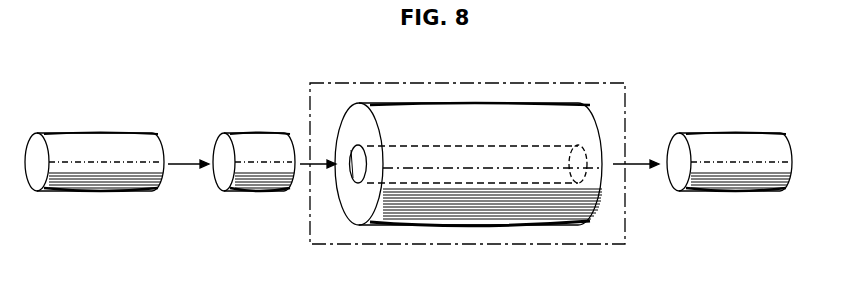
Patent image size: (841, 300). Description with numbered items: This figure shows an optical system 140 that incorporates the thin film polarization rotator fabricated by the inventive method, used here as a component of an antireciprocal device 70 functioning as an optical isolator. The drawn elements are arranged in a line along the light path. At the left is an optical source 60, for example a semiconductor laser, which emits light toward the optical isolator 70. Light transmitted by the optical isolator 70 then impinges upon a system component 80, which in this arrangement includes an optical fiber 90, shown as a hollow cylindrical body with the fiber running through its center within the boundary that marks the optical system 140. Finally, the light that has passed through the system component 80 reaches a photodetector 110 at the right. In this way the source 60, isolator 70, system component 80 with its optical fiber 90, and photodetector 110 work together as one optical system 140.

The optical source 60 is at (108, 138).
The antireciprocal device 70 is at (250, 140).
The system component 80 is at (490, 237).
The optical fiber 90 is at (344, 200).
The photodetector 110 is at (735, 138).
The optical system 140 is at (315, 60).